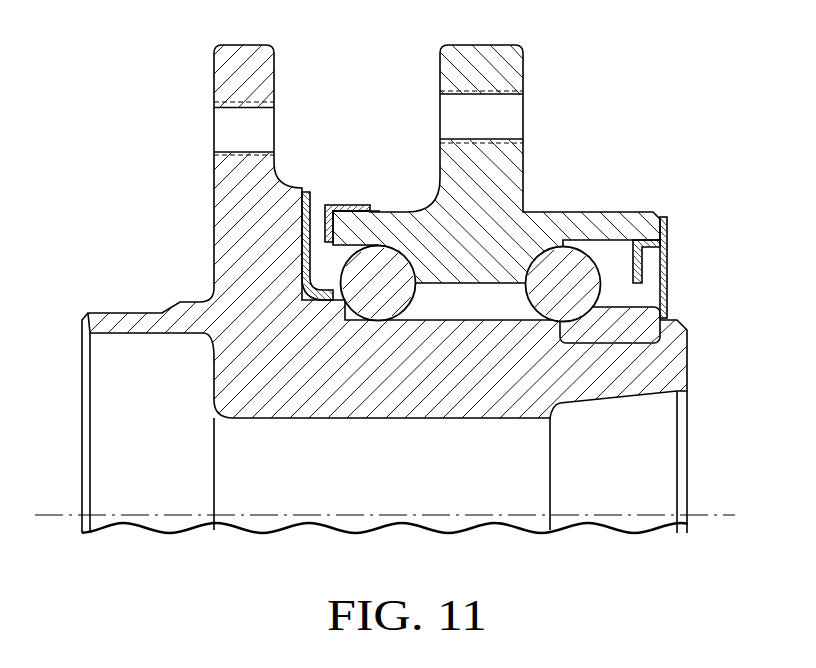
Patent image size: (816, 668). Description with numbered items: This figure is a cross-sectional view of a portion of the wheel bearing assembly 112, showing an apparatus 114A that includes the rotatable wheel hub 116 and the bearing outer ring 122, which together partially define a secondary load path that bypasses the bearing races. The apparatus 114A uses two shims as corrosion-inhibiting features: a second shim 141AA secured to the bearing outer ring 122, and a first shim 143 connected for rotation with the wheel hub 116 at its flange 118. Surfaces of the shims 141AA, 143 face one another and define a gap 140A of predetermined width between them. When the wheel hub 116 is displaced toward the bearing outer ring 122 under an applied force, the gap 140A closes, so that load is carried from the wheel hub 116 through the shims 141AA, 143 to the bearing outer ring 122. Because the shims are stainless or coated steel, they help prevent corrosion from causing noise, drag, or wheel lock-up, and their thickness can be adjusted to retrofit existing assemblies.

The wheel bearing assembly 112 is at (502, 183).
The apparatus 114A is at (489, 164).
The wheel hub 116 is at (633, 377).
The flange 118 is at (237, 232).
The bearing outer ring 122 is at (524, 163).
The gap 140A is at (318, 209).
The second shim 141AA is at (372, 209).
The first shim 143 is at (303, 190).